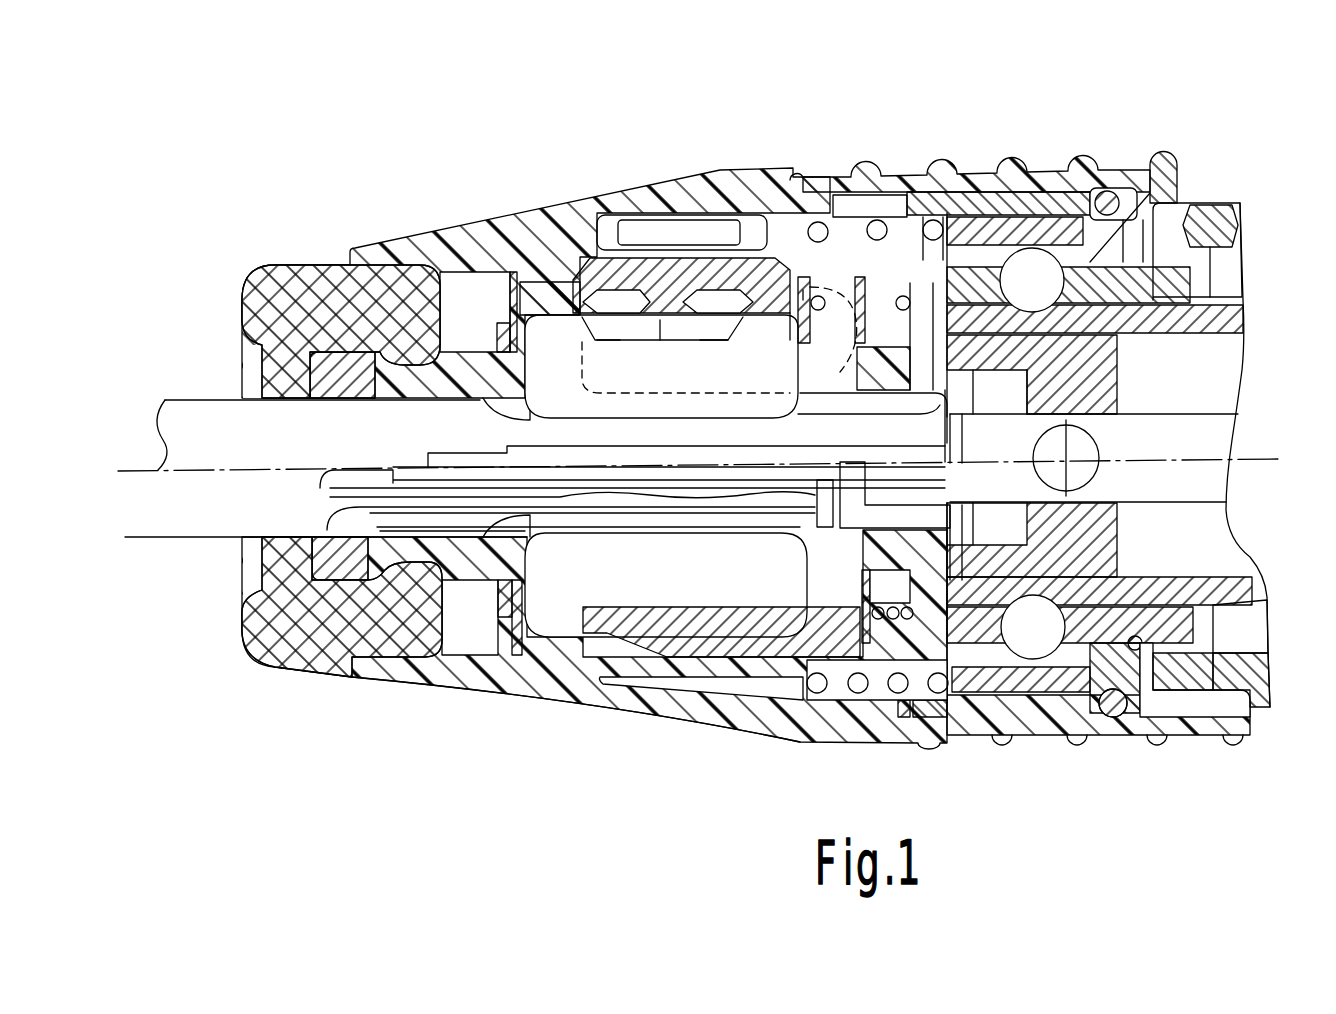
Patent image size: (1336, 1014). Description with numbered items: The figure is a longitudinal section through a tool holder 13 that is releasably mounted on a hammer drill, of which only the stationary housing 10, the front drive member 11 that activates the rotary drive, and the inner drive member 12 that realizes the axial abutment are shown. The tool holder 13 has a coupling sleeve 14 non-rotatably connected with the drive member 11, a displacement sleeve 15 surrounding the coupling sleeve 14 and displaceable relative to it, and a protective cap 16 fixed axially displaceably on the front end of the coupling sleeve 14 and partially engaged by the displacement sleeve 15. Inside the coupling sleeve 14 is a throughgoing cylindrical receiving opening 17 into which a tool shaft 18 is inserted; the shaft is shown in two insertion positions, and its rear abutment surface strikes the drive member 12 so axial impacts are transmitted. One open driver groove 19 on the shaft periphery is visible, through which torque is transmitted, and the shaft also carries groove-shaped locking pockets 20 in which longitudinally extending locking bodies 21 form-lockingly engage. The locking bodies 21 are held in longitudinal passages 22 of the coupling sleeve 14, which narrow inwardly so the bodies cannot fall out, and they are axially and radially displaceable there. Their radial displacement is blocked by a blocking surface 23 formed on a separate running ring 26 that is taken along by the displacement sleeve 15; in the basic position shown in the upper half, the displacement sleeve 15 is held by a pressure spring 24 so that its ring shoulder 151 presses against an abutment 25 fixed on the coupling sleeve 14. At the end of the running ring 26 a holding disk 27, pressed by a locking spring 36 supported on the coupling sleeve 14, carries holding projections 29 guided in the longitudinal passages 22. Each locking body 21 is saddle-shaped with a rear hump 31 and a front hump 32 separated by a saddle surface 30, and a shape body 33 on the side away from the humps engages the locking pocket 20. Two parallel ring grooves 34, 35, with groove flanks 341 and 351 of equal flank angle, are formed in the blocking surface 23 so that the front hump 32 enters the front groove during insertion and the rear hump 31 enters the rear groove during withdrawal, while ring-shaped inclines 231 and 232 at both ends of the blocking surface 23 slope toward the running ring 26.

The stationary housing 10 is at (1215, 215).
The front drive member 11 is at (1243, 320).
The inner drive member 12 is at (1190, 470).
The tool holder 13 is at (688, 735).
The coupling sleeve 14 is at (460, 590).
The displacement sleeve 15 is at (415, 253).
The ring shoulder 151 is at (513, 300).
The protective cap 16 is at (278, 295).
The receiving opening 17 is at (373, 600).
The tool shaft 18 is at (232, 437).
The driver groove 19 is at (553, 452).
The locking pocket 20 is at (950, 290).
The locking body 21 is at (657, 300).
The longitudinal passage 22 is at (877, 220).
The blocking surface 23 is at (757, 310).
The ring-shaped incline 231 is at (788, 312).
The ring-shaped incline 232 is at (533, 330).
The pressure spring 24 is at (903, 296).
The abutment 25 is at (500, 300).
The running ring 26 is at (690, 290).
The holding disk 27 is at (825, 360).
The holding projection 29 is at (825, 390).
The saddle surface 30 is at (673, 333).
The rear hump 31 is at (803, 290).
The front hump 32 is at (560, 340).
The shape body 33 is at (712, 403).
The rear ring groove 34 is at (720, 300).
The groove flank 341 is at (666, 312).
The front ring groove 35 is at (610, 305).
The groove flank 351 is at (640, 305).
The locking spring 36 is at (862, 300).